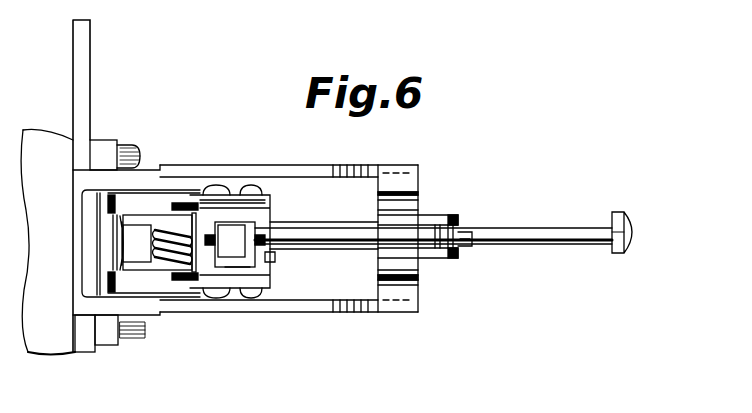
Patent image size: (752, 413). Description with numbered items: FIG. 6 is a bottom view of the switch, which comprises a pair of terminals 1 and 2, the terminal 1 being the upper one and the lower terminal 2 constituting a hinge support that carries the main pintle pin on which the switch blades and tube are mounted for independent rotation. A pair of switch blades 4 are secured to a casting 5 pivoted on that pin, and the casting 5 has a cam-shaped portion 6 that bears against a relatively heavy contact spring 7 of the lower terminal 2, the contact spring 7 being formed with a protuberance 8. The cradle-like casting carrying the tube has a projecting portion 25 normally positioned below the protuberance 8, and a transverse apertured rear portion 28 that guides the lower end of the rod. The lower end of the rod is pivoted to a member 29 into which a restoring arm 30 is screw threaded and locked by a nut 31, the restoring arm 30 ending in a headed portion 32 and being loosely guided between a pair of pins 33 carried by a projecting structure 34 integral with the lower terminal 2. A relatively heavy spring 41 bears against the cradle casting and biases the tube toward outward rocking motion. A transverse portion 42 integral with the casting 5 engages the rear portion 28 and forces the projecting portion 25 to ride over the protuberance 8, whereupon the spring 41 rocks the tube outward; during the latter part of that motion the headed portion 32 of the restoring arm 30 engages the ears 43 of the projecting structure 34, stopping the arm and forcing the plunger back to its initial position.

The terminal 1 is at (235, 243).
The lower terminal 2 is at (85, 357).
The switch blades 4 is at (263, 185).
The casting 5 is at (229, 206).
The cam-shaped portion 6 is at (115, 205).
The contact spring 7 is at (95, 206).
The protuberance 8 is at (108, 222).
The projecting portion 25 is at (112, 240).
The transverse apertured rear portion 28 is at (324, 249).
The member 29 is at (235, 246).
The restoring arm 30 is at (556, 223).
The nut 31 is at (258, 234).
The headed portion 32 is at (626, 219).
The pins 33 is at (467, 247).
The projecting structure 34 is at (310, 163).
The spring 41 is at (160, 226).
The transverse portion 42 is at (272, 266).
The ears 43 is at (449, 212).